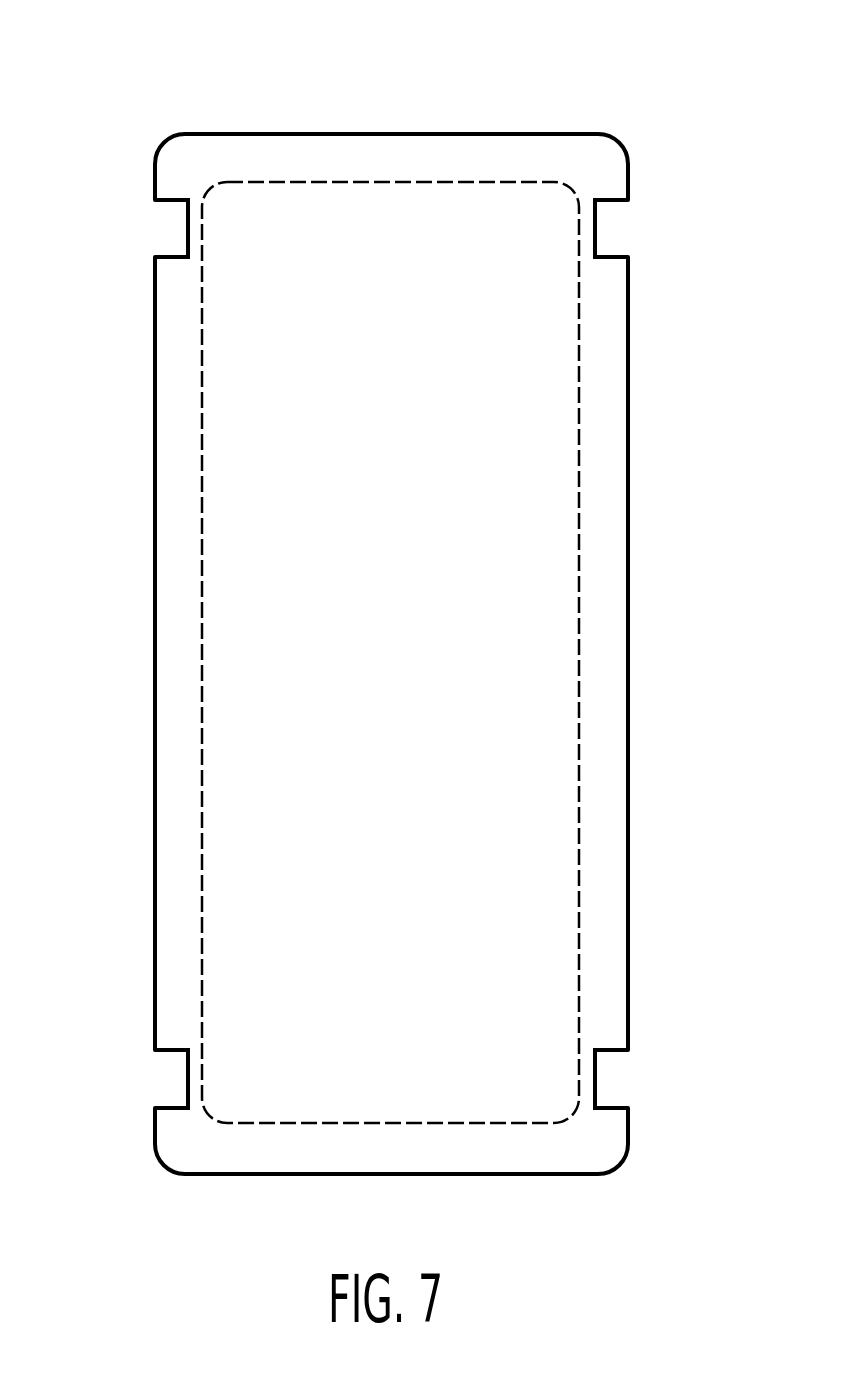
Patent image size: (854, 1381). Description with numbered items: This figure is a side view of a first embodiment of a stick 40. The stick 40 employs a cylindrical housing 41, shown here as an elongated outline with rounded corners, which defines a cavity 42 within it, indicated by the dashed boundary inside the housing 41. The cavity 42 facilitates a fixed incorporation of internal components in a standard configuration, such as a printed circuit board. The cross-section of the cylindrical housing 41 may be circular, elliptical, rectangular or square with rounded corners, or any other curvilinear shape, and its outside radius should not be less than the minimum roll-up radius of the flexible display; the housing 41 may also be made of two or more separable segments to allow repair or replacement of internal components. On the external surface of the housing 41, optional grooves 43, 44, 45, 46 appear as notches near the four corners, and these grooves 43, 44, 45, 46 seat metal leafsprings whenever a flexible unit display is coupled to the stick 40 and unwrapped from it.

The stick 40 is at (394, 593).
The cylindrical housing 41 is at (630, 502).
The cavity 42 is at (402, 666).
The groove 43 is at (186, 225).
The groove 44 is at (186, 1076).
The groove 45 is at (597, 226).
The groove 46 is at (597, 1077).